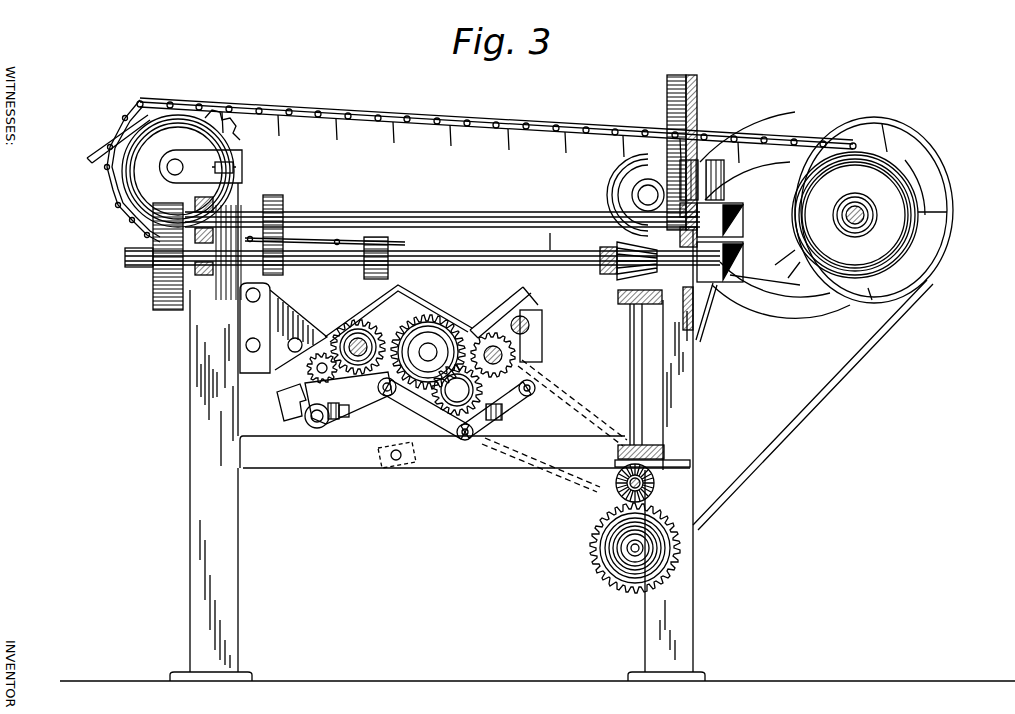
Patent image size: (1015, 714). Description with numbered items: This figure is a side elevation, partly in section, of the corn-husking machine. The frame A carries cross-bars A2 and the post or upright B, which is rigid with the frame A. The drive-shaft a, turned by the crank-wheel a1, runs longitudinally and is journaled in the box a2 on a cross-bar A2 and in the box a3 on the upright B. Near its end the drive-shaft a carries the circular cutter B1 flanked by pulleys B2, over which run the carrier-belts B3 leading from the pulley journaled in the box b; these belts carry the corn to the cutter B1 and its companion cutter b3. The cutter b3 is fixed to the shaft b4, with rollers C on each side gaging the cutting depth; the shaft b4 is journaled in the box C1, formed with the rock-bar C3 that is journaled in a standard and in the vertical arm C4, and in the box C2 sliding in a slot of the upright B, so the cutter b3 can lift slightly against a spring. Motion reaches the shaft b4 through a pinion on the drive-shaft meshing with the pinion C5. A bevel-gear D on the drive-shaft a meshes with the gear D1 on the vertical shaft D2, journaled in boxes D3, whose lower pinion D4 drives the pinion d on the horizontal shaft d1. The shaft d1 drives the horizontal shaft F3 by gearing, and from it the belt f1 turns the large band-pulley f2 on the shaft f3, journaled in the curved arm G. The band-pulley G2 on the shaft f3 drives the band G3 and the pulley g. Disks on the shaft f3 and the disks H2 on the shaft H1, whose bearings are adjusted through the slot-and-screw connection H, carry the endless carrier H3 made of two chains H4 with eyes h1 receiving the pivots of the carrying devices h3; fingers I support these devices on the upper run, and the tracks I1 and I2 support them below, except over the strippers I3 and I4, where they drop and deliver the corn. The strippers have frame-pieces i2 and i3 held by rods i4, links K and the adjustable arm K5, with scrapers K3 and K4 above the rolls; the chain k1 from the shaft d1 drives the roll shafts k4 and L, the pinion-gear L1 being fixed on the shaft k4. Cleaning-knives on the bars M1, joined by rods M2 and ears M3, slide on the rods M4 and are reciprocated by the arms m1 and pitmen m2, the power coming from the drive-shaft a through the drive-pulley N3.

The frame A is at (706, 586).
The cross-bars A2 is at (717, 323).
The post or upright B is at (700, 113).
The circular cutter B1 is at (745, 298).
The pulleys B2 is at (742, 280).
The carrier-belts B3 is at (640, 250).
The rollers C is at (712, 207).
The box C1 is at (220, 205).
The box C2 is at (712, 158).
The rock-bar C3 is at (195, 200).
The vertical arm C4 is at (278, 278).
The pinion C5 is at (283, 200).
The bevel-gear D is at (610, 290).
The gear D1 is at (618, 296).
The vertical shaft D2 is at (632, 358).
The boxes D3 is at (620, 300).
The beveled pinion D4 is at (692, 470).
The pinion d is at (647, 484).
The horizontal shaft d1 is at (616, 483).
The horizontal shaft F3 is at (632, 548).
The belt or band f1 is at (798, 407).
The large band-pulley f2 is at (926, 240).
The shaft f3 is at (850, 184).
The arm G is at (772, 175).
The band-pulley G2 is at (855, 215).
The band G3 is at (640, 186).
The pulley g is at (612, 184).
The slot-and-screw connection H is at (243, 163).
The revolving shaft H1 is at (170, 168).
The disks H2 is at (200, 146).
The endless carrier or conveyer H3 is at (470, 108).
The chains H4 is at (372, 150).
The eyes h1 is at (383, 118).
The pivoted carrying devices h3 is at (450, 130).
The fingers I is at (432, 337).
The track or support I1 is at (495, 282).
The track or support I2 is at (935, 206).
The stripping device I3 is at (476, 314).
The stripping device I4 is at (298, 315).
The frame-piece i2 is at (246, 296).
The frame-piece i3 is at (253, 352).
The bars or rods i4 is at (250, 297).
The links K is at (250, 322).
The scrapers K3 is at (426, 333).
The scraper K4 is at (398, 306).
The adjustable arm K5 is at (417, 467).
The chain k1 is at (577, 408).
The extended roll shaft k4 is at (528, 385).
The extended roll shaft L is at (528, 325).
The pinion-gear L1 is at (505, 355).
The bars M1 is at (395, 415).
The rods M2 is at (358, 406).
The ears M3 is at (457, 390).
The rods M4 is at (316, 428).
The arms m1 is at (504, 419).
The pitmen m2 is at (336, 421).
The drive-pulley N3 is at (406, 243).
The drive-shaft a is at (442, 253).
The crank-wheel a1 is at (183, 258).
The box a2 is at (186, 245).
The box a3 is at (703, 303).
The box b is at (585, 202).
The cutter b3 is at (728, 215).
The shaft b4 is at (532, 212).